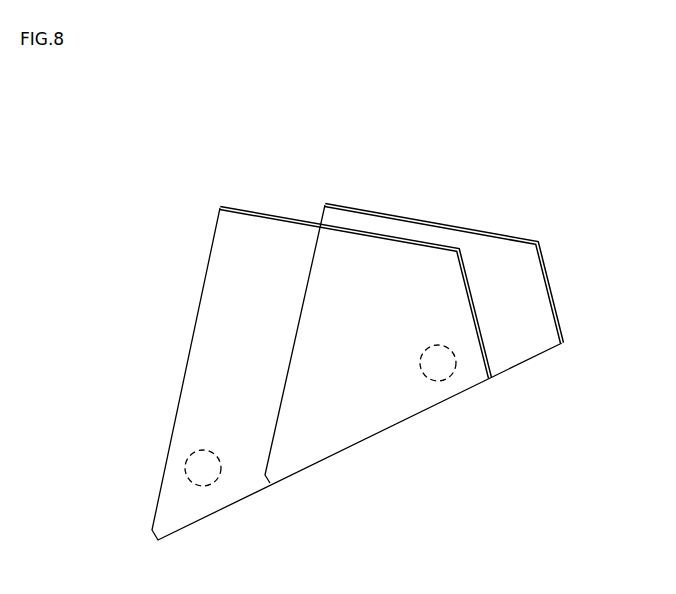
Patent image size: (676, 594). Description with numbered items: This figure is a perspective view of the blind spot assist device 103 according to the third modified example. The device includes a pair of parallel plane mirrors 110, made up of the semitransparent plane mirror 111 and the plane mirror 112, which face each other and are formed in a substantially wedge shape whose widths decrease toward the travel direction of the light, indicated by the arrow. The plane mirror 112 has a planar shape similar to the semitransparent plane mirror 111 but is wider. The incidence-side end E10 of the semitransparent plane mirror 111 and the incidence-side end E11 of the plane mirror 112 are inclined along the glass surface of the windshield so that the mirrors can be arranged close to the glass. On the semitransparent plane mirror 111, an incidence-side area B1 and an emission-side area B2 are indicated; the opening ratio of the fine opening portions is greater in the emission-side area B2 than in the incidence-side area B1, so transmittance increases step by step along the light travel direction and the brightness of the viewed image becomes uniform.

The incidence-side end of the semitransparent plane mirror E10 is at (215, 222).
The incidence-side end of the plane mirror E11 is at (414, 202).
The pair of parallel plane mirrors 110 is at (548, 190).
The semitransparent plane mirror 111 is at (472, 282).
The plane mirror 112 is at (456, 228).
The incidence-side area B1 is at (212, 486).
The emission-side area B2 is at (441, 381).
The blind spot assist device 103 is at (517, 422).